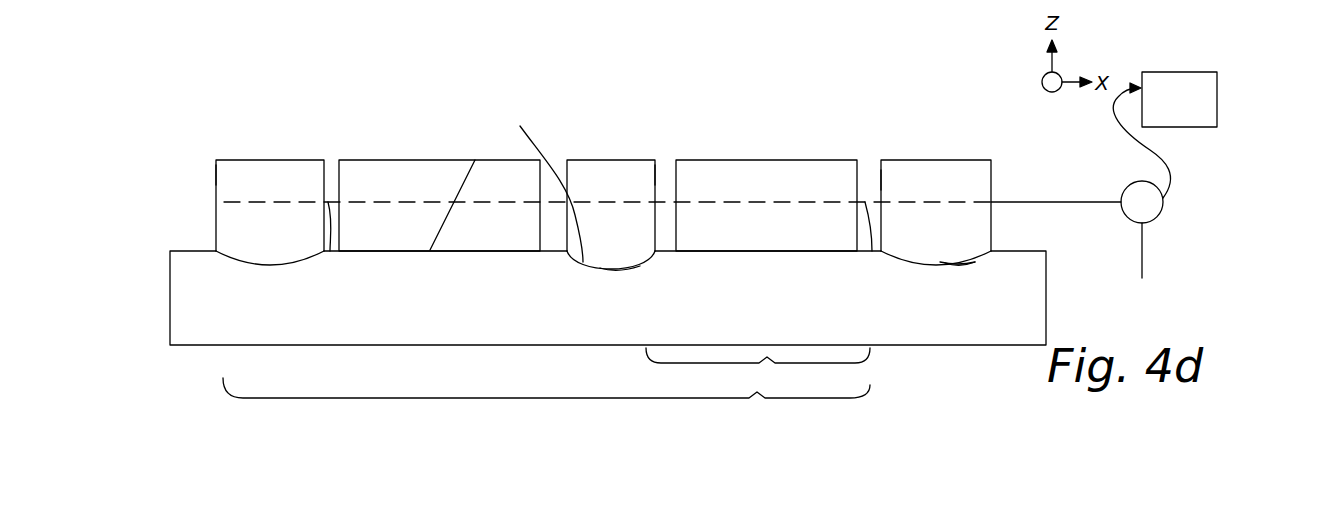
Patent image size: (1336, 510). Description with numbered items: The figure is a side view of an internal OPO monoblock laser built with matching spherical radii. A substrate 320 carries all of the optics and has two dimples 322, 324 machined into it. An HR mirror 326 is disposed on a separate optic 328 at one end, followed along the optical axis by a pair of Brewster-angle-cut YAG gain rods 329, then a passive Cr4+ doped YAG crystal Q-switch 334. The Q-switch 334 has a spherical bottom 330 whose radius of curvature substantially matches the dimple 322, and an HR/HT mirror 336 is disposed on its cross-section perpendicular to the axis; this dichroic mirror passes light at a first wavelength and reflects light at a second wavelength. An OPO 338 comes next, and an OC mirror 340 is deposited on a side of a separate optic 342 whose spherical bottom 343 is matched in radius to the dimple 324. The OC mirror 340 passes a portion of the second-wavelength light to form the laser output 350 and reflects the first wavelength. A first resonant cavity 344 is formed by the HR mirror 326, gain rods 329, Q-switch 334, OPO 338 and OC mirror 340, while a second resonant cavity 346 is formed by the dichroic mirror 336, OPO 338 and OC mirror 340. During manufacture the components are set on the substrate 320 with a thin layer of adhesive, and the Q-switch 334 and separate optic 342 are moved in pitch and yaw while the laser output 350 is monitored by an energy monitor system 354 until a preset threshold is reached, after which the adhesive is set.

The substrate 320 is at (442, 322).
The dimple 322 is at (620, 271).
The dimple 324 is at (960, 262).
The HR mirror 326 is at (217, 175).
The separate optic 328 is at (250, 160).
The YAG gain rods 329 is at (390, 160).
The spherical bottom 330 is at (536, 184).
The Q-switch 334 is at (572, 160).
The HR/HT mirror 336 is at (656, 175).
The OPO 338 is at (747, 160).
The OC mirror 340 is at (883, 178).
The separate optic 342 is at (938, 160).
The spherical bottom 343 is at (960, 262).
The first resonant cavity 344 is at (546, 405).
The second resonant cavity 346 is at (758, 372).
The laser output 350 is at (1060, 203).
The energy monitor system 354 is at (1160, 111).